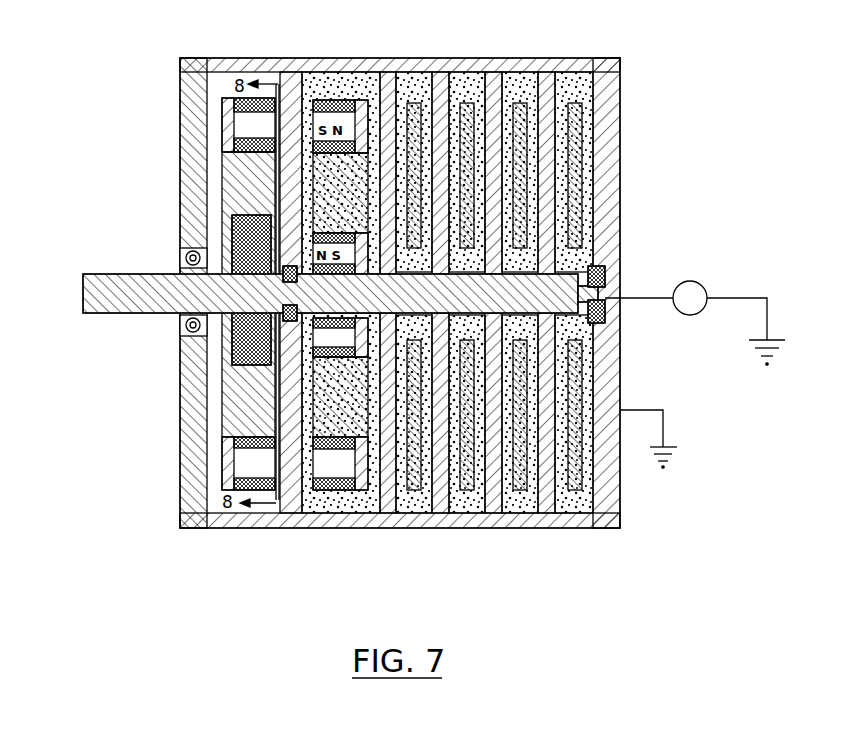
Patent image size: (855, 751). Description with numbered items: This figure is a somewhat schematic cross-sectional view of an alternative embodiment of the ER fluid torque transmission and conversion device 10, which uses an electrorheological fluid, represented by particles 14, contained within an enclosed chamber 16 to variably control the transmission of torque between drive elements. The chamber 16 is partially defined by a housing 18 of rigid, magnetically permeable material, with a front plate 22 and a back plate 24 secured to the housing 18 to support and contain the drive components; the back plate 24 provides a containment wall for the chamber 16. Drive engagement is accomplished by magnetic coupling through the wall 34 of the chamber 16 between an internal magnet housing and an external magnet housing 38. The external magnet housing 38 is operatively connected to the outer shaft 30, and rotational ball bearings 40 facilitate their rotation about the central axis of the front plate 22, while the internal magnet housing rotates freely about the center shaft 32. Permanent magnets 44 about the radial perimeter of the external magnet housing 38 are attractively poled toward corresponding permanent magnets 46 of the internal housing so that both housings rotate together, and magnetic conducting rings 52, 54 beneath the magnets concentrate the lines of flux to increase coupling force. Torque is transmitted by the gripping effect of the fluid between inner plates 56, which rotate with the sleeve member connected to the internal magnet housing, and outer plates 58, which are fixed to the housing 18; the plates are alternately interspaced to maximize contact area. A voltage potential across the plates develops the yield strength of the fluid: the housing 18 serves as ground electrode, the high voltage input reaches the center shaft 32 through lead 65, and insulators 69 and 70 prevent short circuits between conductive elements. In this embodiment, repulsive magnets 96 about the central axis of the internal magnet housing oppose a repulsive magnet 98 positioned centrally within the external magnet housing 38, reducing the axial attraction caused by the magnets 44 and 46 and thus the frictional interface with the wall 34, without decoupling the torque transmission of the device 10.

The ER fluid torque transmission and conversion device 10 is at (712, 144).
The particles 14 is at (582, 72).
The enclosed chamber 16 is at (470, 88).
The housing 18 is at (279, 58).
The front plate 22 is at (180, 82).
The back plate 24 is at (620, 88).
The outer shaft 30 is at (83, 282).
The center shaft 32 is at (620, 246).
The wall 34 is at (314, 58).
The external magnet housing 38 is at (236, 406).
The rotational ball bearings 40 is at (181, 262).
The permanent magnets 44 is at (232, 444).
The permanent magnets 46 is at (300, 528).
The magnetic conducting ring 52 is at (360, 528).
The magnetic conducting ring 54 is at (183, 58).
The inner plates 56 is at (513, 528).
The outer plates 58 is at (440, 528).
The lead 65 is at (704, 284).
The insulator 69 is at (606, 322).
The insulator 70 is at (181, 338).
The repulsive magnets 96 is at (305, 212).
The repulsive magnet 98 is at (282, 224).